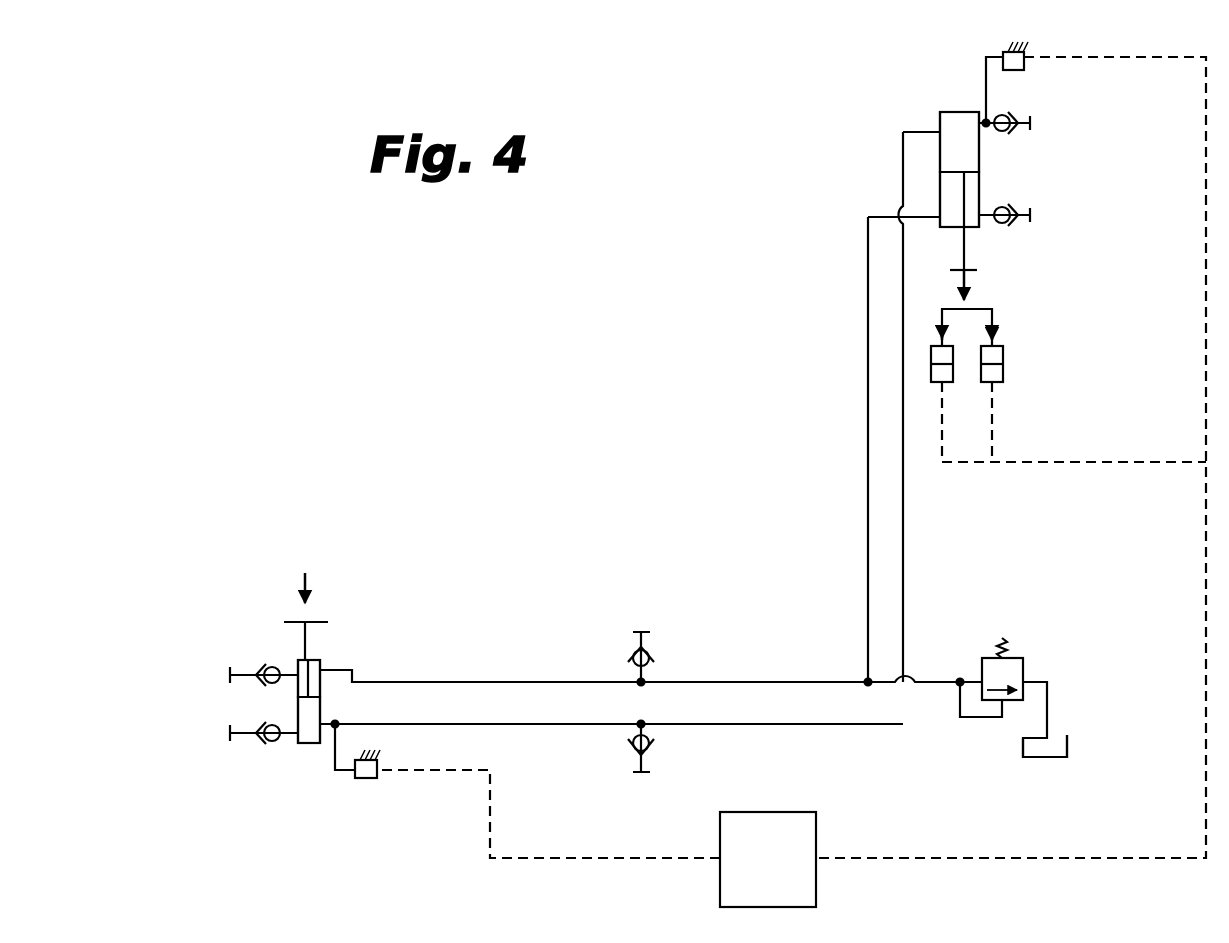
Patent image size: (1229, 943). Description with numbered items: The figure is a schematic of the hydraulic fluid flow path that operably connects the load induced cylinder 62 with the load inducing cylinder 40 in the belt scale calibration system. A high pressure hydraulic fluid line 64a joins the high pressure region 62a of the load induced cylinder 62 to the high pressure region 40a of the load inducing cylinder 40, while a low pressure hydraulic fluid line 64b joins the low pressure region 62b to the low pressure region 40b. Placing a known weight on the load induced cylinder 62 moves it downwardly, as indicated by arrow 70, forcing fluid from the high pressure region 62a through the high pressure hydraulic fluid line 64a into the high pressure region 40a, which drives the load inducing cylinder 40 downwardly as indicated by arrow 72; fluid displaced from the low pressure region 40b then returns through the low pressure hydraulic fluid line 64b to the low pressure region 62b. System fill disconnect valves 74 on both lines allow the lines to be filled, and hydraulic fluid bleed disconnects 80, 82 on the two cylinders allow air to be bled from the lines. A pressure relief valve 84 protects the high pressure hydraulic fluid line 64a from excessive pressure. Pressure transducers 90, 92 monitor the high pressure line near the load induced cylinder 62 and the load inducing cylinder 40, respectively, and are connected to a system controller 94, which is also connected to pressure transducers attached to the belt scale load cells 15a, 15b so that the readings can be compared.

The load inducing cylinder 40 is at (938, 147).
The high pressure region of the load inducing cylinder 40a is at (958, 112).
The low pressure region of the load inducing cylinder 40b is at (950, 186).
The pressure transducer 92 is at (1003, 55).
The hydraulic fluid bleed disconnect 82 is at (1015, 198).
The arrow 72 is at (968, 292).
The belt scale load cell 15a is at (931, 370).
The belt scale load cell 15b is at (992, 358).
The arrow 70 is at (308, 588).
The load induced cylinder 62 is at (296, 658).
The high pressure region of the load induced cylinder 62a is at (306, 740).
The low pressure region of the load induced cylinder 62b is at (322, 668).
The hydraulic fluid bleed disconnect 80 is at (250, 738).
The high pressure hydraulic fluid line 64a is at (518, 726).
The low pressure hydraulic fluid line 64b is at (532, 682).
The system fill disconnect valve 74 is at (648, 635).
The pressure transducer 90 is at (364, 778).
The pressure relief valve 84 is at (1022, 757).
The system controller 94 is at (816, 823).